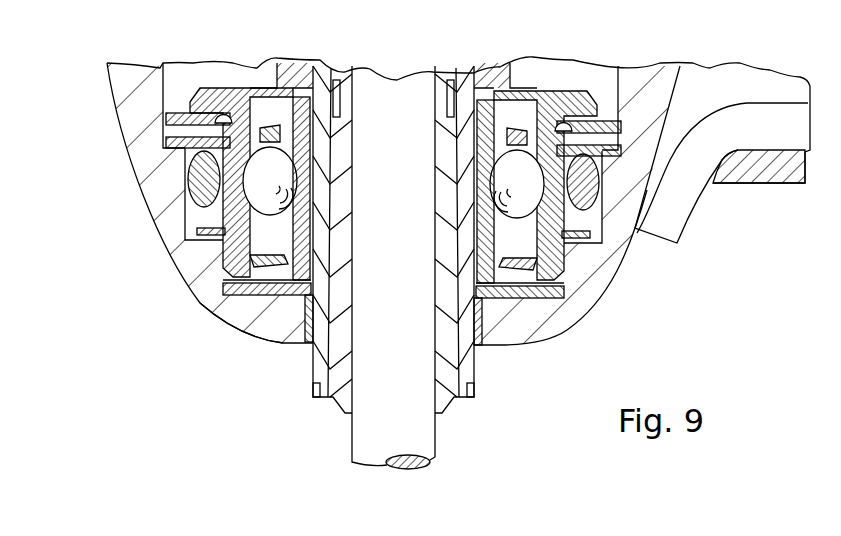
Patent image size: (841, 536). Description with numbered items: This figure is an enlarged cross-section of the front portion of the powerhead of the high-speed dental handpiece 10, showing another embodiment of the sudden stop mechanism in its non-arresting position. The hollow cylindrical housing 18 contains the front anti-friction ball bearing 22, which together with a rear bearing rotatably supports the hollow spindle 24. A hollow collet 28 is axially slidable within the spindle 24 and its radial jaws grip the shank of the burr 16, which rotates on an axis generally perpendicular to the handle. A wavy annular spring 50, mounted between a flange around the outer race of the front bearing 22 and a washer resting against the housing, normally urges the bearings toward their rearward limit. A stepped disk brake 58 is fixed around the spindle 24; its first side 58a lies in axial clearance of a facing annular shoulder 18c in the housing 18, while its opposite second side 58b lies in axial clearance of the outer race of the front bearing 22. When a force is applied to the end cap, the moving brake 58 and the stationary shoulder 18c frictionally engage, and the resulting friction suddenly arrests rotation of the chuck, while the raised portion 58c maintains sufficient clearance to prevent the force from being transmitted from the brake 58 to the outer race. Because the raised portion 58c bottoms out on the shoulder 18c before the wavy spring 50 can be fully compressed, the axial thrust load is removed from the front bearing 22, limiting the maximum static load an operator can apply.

The high-speed dental handpiece 10 is at (198, 297).
The burr 16 is at (423, 440).
The housing 18 is at (135, 150).
The annular shoulder 18c is at (181, 273).
The front anti-friction ball bearing 22 is at (472, 232).
The hollow spindle 24 is at (313, 388).
The hollow collet 28 is at (448, 398).
The wavy annular spring 50 is at (163, 63).
The stepped disk brake 58 is at (212, 295).
The first side of disk brake 58a is at (270, 296).
The second side of disk brake 58b is at (558, 284).
The raised portion of disk brake 58c is at (484, 300).